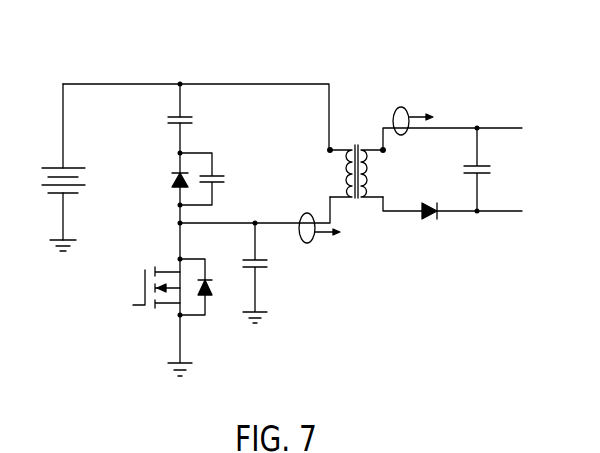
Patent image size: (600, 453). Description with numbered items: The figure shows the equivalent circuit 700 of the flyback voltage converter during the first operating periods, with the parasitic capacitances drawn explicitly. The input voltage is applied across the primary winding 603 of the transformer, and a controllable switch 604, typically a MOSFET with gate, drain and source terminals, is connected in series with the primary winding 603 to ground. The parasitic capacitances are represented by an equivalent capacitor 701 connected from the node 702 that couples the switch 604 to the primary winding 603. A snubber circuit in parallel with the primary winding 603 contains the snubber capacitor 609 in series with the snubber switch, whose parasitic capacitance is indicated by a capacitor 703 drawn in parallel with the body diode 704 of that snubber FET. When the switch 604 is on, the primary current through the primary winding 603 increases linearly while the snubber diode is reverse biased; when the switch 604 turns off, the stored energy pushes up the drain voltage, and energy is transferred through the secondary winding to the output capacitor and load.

The equivalent circuit 700 is at (195, 29).
The primary winding 603 is at (336, 146).
The snubber capacitor 609 is at (172, 123).
The capacitor (C2) 703 is at (215, 174).
The body diode (D2) 704 is at (174, 186).
The controllable switch 604 is at (163, 271).
The node 702 is at (290, 221).
The equivalent capacitor (Ceq) 701 is at (258, 269).